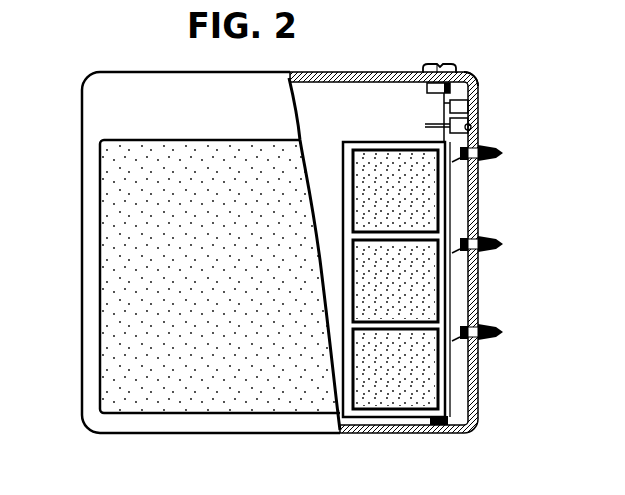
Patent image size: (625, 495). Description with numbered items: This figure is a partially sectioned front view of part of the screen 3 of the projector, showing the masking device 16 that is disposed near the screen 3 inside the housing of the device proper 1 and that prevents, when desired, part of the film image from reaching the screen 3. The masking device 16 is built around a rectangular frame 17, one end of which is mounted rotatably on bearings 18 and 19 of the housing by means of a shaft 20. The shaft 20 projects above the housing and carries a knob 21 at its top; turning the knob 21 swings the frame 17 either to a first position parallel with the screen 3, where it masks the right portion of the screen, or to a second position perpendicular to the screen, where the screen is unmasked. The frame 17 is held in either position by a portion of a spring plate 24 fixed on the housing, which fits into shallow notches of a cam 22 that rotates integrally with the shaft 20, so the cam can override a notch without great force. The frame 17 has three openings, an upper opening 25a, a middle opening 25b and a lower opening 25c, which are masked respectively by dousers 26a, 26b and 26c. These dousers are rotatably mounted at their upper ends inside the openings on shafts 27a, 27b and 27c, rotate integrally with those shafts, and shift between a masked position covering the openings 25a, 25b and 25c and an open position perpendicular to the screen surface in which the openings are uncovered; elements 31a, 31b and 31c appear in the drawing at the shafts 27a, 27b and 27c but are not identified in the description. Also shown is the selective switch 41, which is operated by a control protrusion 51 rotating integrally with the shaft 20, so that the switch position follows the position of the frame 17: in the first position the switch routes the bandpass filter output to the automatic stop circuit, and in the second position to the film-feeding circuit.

The device proper 1 is at (82, 101).
The screen 3 is at (100, 362).
The masking device 16 is at (447, 315).
The rectangular frame 17 is at (403, 418).
The bearing 18 is at (466, 88).
The bearing 19 is at (440, 428).
The shaft 20 is at (440, 105).
The knob 21 is at (437, 63).
The cam 22 is at (425, 125).
The spring plate 24 is at (477, 129).
The upper opening 25a is at (357, 210).
The middle opening 25b is at (441, 292).
The lower opening 25c is at (432, 390).
The douser 26a is at (363, 156).
The douser 26b is at (350, 300).
The douser 26c is at (363, 400).
The shaft 27a is at (463, 168).
The shaft 27b is at (456, 238).
The shaft 27c is at (455, 322).
The first clip 31a is at (501, 156).
The second clip 31b is at (503, 246).
The third clip 31c is at (490, 342).
The selective switch 41 is at (471, 114).
The control protrusion 51 is at (470, 101).